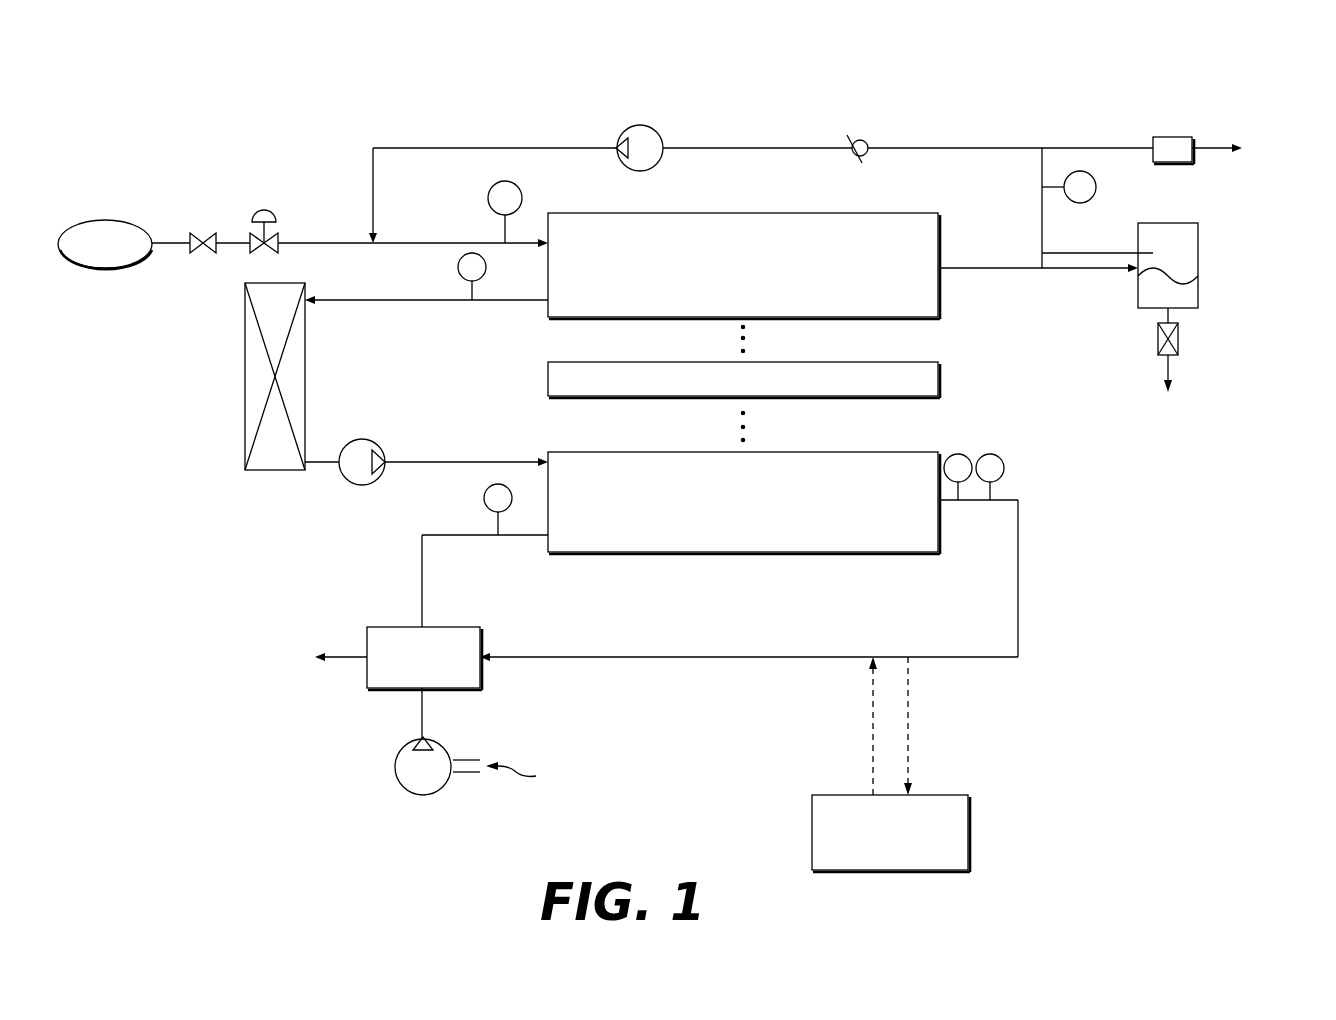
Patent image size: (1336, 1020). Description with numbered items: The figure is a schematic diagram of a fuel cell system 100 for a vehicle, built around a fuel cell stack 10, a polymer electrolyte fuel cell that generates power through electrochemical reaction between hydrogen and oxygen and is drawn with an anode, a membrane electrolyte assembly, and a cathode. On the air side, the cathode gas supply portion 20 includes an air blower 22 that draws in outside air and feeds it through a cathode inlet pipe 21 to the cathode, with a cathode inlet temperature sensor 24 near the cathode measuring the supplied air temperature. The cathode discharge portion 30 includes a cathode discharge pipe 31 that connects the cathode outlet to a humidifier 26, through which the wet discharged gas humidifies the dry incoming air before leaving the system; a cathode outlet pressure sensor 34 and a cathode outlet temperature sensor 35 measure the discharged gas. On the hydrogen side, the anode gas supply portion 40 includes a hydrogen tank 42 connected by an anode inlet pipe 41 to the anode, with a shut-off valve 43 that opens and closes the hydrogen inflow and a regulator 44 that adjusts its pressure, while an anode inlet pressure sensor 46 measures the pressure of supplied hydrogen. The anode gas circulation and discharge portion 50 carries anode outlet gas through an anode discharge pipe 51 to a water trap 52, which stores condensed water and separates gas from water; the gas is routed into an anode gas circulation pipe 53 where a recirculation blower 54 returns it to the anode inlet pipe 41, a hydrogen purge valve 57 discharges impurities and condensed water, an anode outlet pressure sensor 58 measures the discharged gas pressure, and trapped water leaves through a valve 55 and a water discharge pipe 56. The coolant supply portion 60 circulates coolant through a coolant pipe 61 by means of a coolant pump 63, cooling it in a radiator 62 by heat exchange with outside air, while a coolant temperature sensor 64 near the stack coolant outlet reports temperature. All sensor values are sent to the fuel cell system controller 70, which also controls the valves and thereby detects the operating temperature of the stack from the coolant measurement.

The fuel cell system 100 is at (631, 36).
The fuel cell stack 10 is at (972, 358).
The cathode gas supply portion 20 is at (330, 752).
The cathode inlet pipe 21 is at (420, 572).
The air blower 22 is at (422, 795).
The cathode inlet temperature sensor 24 is at (485, 498).
The humidifier 26 is at (483, 680).
The cathode discharge portion 30 is at (1068, 548).
The cathode discharge pipe 31 is at (740, 654).
The cathode outlet pressure sensor 34 is at (958, 453).
The cathode outlet temperature sensor 35 is at (1001, 458).
The anode gas supply portion 40 is at (303, 147).
The anode inlet pipe 41 is at (165, 248).
The hydrogen tank 42 is at (106, 222).
The shut-off valve 43 is at (198, 234).
The regulator 44 is at (257, 212).
The anode inlet pressure sensor 46 is at (488, 198).
The anode gas circulation and discharge portion 50 is at (1250, 206).
The anode discharge pipe 51 is at (986, 270).
The water trap 52 is at (1138, 292).
The anode gas circulation pipe 53 is at (754, 146).
The recirculation blower 54 is at (654, 129).
The valve to discharge water 55 is at (1180, 338).
The water discharge pipe 56 is at (1170, 370).
The hydrogen purge valve 57 is at (1172, 135).
The anode outlet pressure sensor 58 is at (1097, 183).
The coolant supply portion 60 is at (154, 410).
The coolant pipe 61 is at (356, 302).
The radiator 62 is at (243, 352).
The coolant pump 63 is at (350, 482).
The coolant temperature sensor 64 is at (458, 267).
The fuel cell system controller 70 is at (890, 874).